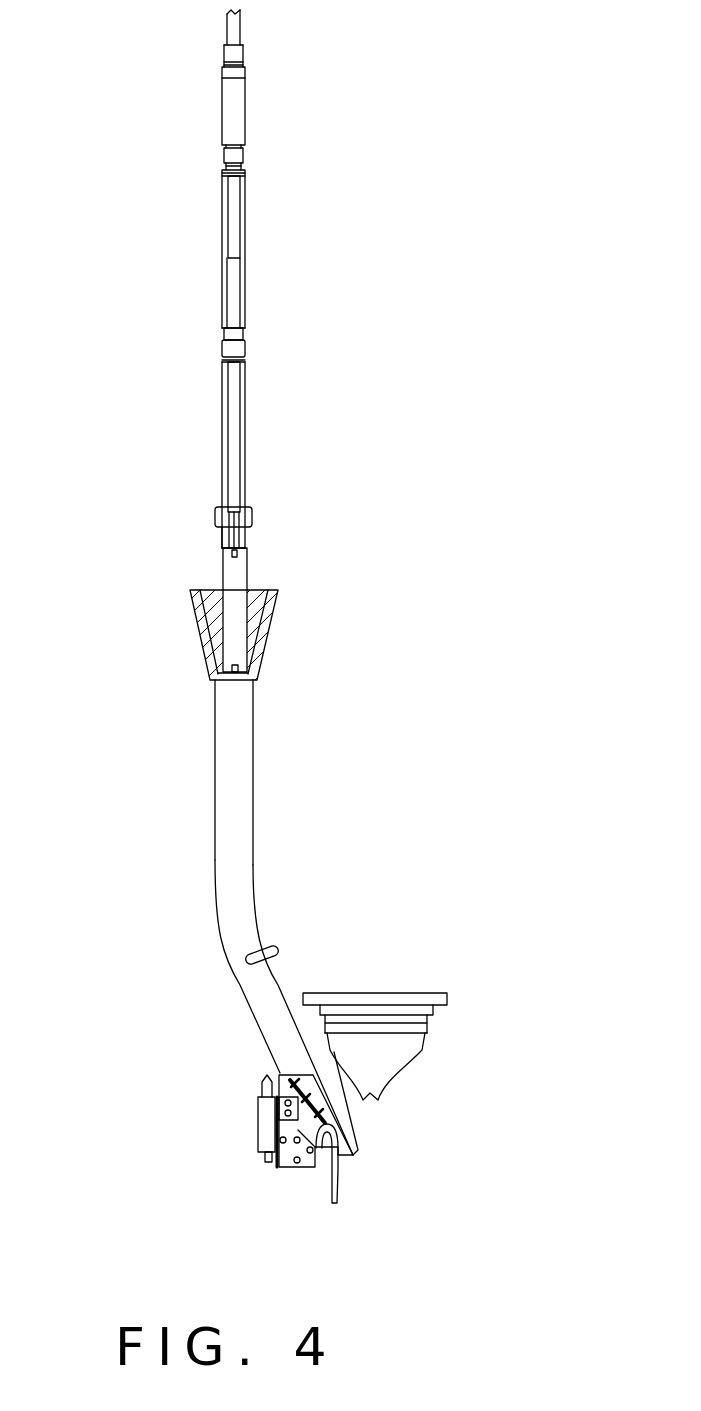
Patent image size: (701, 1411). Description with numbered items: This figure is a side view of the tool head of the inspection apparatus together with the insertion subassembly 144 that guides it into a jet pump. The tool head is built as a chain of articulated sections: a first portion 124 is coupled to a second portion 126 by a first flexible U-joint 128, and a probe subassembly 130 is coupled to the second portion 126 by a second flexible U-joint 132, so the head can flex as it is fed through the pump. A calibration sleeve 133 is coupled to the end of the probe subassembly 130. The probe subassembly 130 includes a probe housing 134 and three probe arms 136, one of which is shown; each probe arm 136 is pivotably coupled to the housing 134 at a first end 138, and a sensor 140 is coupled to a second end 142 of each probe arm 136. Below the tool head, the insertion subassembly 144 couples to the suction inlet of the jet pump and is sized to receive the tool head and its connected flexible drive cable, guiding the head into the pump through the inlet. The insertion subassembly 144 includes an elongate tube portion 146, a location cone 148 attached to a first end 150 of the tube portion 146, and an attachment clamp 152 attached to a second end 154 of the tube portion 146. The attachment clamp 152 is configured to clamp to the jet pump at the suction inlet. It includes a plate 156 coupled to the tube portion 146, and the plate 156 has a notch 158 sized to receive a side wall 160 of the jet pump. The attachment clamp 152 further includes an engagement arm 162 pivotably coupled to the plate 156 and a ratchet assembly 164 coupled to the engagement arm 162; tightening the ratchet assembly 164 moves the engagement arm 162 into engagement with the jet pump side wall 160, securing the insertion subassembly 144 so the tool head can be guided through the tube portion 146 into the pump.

The first portion 124 is at (238, 128).
The second portion 126 is at (237, 217).
The first flexible U-joint 128 is at (240, 170).
The probe subassembly 130 is at (264, 450).
The second flexible U-joint 132 is at (246, 350).
The calibration sleeve 133 is at (247, 572).
The probe housing 134 is at (222, 536).
The probe arm 136 is at (241, 498).
The first end 138 is at (240, 395).
The sensor 140 is at (244, 541).
The second end 142 is at (254, 516).
The insertion subassembly 144 is at (197, 805).
The elongate tube portion 146 is at (254, 822).
The location cone 148 is at (265, 622).
The first end 150 is at (272, 704).
The attachment clamp 152 is at (231, 1124).
The second end 154 is at (259, 1053).
The plate 156 is at (303, 1073).
The notch 158 is at (328, 1140).
The side wall 160 is at (320, 1195).
The engagement arm 162 is at (294, 1163).
The ratchet assembly 164 is at (258, 1131).